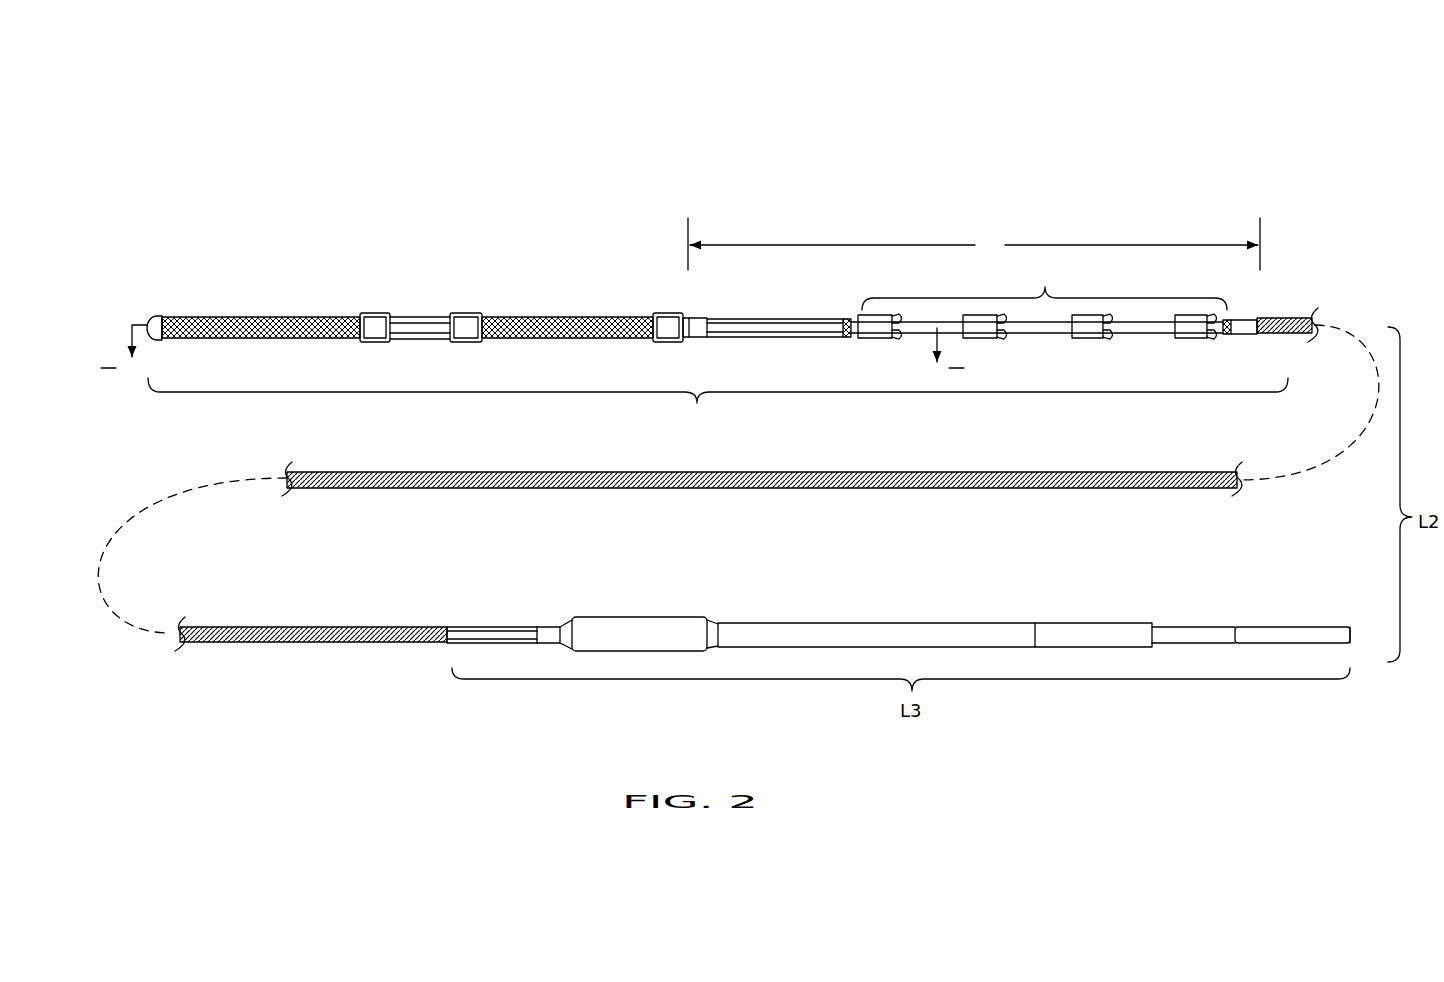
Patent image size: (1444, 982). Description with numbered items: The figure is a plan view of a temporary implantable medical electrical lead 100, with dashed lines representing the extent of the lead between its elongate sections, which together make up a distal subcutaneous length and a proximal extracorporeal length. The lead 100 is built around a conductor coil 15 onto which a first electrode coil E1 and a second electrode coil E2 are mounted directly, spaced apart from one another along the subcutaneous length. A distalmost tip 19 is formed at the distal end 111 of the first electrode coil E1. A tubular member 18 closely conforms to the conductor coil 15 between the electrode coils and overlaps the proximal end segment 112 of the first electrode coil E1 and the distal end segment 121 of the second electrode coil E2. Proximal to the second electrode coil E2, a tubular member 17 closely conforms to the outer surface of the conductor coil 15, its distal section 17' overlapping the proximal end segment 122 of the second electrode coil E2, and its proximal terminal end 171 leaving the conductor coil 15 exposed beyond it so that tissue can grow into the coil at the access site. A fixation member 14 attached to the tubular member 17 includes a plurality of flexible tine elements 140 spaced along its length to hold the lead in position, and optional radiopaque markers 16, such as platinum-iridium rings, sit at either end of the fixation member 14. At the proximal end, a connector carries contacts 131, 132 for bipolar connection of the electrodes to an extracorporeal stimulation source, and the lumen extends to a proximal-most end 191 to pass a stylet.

The temporary implantable medical electrical lead 100 is at (232, 238).
The distalmost tip 19 is at (150, 322).
The distal end of first electrode coil 111 is at (162, 300).
The first electrode coil E1 is at (267, 303).
The proximal end segment of first electrode coil 112 is at (375, 301).
The tubular member 18 is at (416, 341).
The distal end segment of second electrode coil 121 is at (478, 301).
The second electrode coil E2 is at (568, 303).
The proximal end segment of second electrode coil 122 is at (667, 301).
The distal section of tubular member 17' is at (716, 303).
The tubular member 17 is at (775, 304).
The radiopaque markers 16 is at (848, 320).
The proximal terminal end of tubular member 171 is at (1258, 308).
The tine elements 140 is at (877, 342).
The fixation member 14 is at (1044, 288).
The conductor coil 15 is at (1287, 310).
The contact 131 is at (1093, 632).
The contact 132 is at (1266, 636).
The proximal-most end 191 is at (1358, 622).